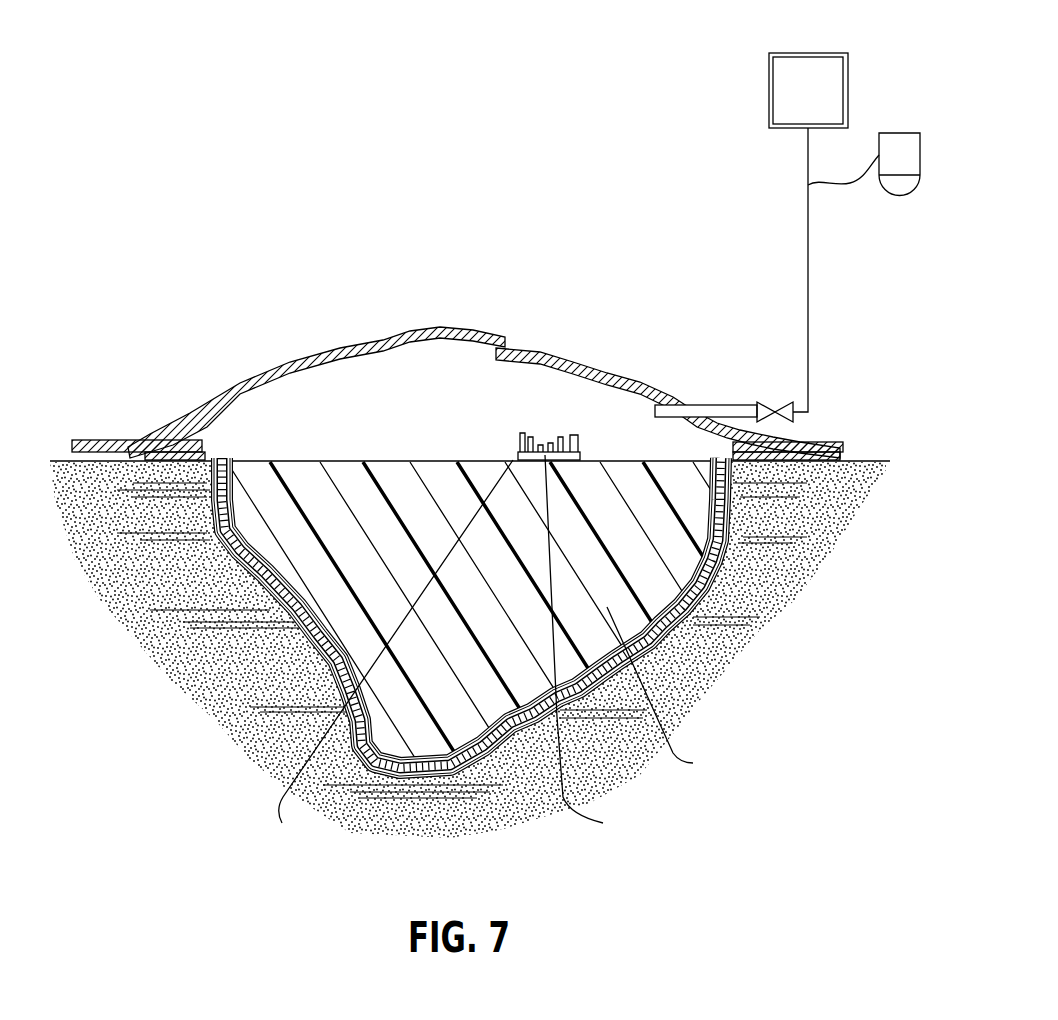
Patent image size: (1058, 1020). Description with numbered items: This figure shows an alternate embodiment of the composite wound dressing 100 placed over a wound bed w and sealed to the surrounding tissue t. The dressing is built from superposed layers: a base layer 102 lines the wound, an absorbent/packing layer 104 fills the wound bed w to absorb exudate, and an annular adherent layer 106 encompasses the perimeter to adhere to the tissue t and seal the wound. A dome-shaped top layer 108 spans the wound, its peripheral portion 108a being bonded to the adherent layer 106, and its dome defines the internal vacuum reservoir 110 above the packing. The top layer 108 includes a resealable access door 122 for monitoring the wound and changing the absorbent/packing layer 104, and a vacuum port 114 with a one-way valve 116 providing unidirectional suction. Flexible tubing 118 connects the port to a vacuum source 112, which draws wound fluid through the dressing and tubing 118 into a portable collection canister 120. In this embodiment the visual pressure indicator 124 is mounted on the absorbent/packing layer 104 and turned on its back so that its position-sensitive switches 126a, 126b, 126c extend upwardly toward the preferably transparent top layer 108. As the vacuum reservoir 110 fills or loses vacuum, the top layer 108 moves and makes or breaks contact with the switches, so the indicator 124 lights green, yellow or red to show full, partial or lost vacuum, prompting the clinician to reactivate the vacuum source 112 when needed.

The composite wound dressing 100 is at (236, 343).
The base layer 102 is at (698, 603).
The absorbent/packing layer 104 is at (640, 565).
The adherent layer 106 is at (140, 440).
The top layer 108 is at (316, 355).
The peripheral portion of the top layer 108a is at (803, 438).
The vacuum reservoir 110 is at (432, 390).
The vacuum source 112 is at (812, 70).
The vacuum port 114 is at (700, 410).
The one-way valve 116 is at (773, 408).
The flexible tubing 118 is at (808, 273).
The collection canister 120 is at (898, 133).
The access door 122 is at (473, 333).
The visual pressure indicator 124 is at (665, 691).
The position-sensitive switch 126a is at (553, 440).
The position-sensitive switch 126b is at (596, 648).
The position-sensitive switch 126c is at (396, 654).
The wound bed w is at (313, 632).
The tissue t is at (810, 465).